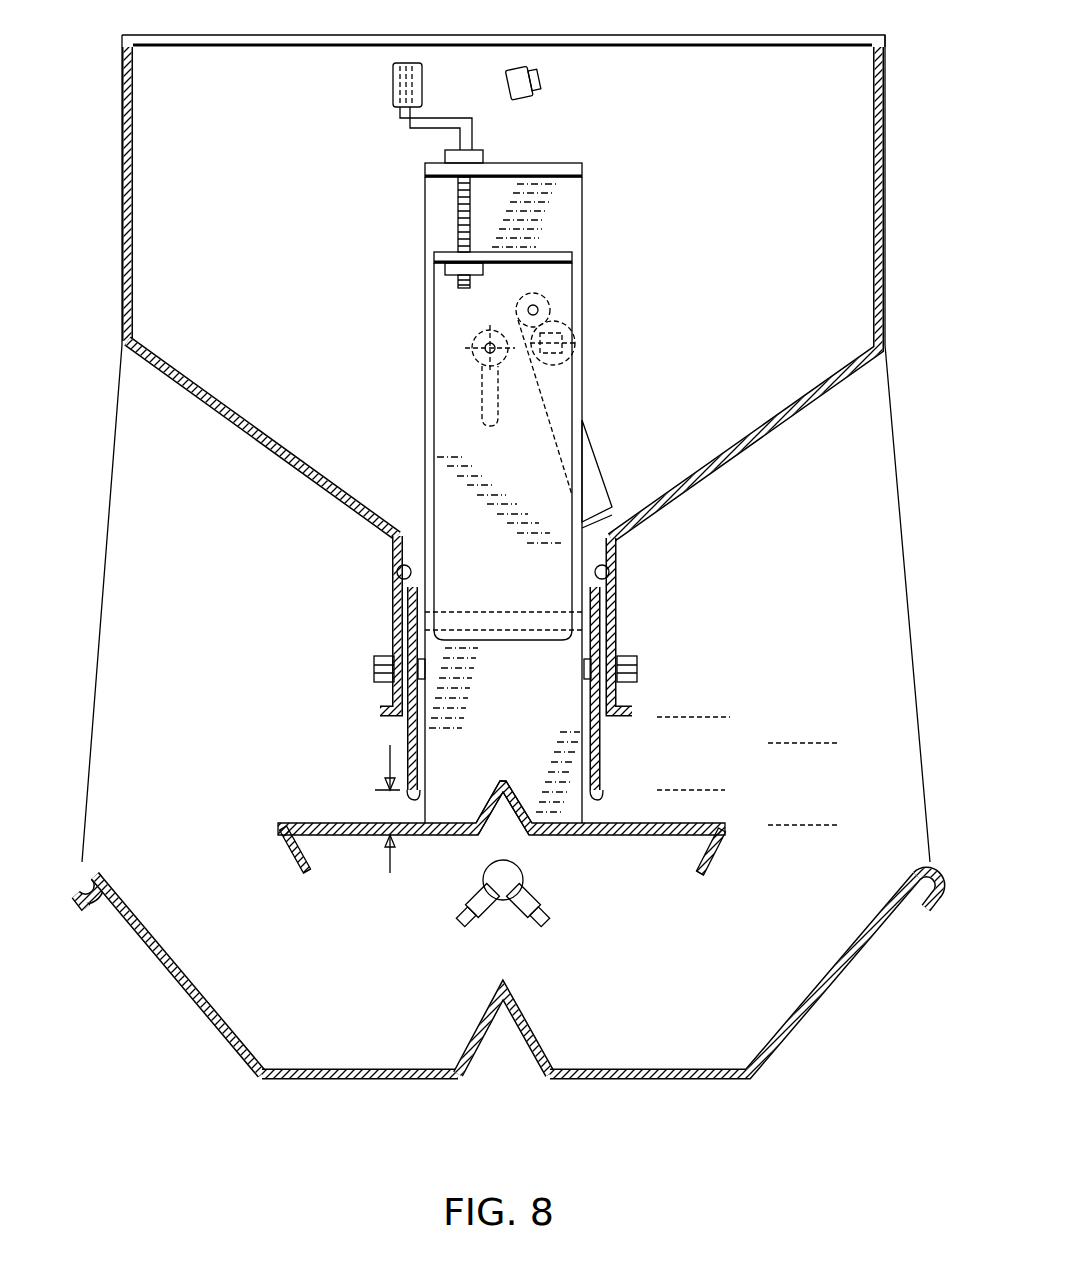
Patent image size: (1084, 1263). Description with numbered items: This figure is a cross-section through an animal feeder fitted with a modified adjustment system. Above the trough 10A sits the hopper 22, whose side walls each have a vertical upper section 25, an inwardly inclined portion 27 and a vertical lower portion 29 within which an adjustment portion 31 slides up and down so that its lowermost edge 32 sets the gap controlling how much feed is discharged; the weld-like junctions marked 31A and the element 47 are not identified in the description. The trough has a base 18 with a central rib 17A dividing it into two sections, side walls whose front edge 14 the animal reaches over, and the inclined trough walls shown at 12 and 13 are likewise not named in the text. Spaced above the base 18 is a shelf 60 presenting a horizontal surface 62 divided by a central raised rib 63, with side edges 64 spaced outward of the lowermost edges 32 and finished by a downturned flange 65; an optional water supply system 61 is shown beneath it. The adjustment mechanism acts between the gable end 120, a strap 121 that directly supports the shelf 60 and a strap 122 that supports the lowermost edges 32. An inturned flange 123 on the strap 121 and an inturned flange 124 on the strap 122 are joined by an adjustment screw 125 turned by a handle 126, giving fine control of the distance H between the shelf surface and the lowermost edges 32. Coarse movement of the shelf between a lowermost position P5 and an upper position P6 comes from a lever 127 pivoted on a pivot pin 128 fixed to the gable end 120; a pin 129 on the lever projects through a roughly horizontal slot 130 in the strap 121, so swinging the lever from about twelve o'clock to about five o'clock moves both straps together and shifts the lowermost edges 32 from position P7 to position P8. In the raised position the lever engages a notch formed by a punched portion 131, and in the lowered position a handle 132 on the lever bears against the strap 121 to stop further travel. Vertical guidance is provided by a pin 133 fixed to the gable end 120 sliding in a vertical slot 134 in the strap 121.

The trough 10A is at (508, 956).
The inclined hopper wall 12 is at (210, 1000).
The inclined hopper wall 13 is at (835, 980).
The front edge 14 is at (90, 862).
The central rib 17A is at (510, 990).
The base 18 is at (355, 1062).
The hopper 22 is at (752, 455).
The vertical upper section 25 is at (133, 270).
The inclined portion 27 is at (300, 470).
The vertical lower portion 29 is at (392, 610).
The adjustment portion 31 is at (405, 740).
The weld 31A is at (397, 572).
The lowermost edge 32 is at (420, 800).
The piston 47 is at (486, 625).
The shelf 60 is at (498, 829).
The water supply system 61 is at (530, 877).
The horizontal surface 62 is at (345, 835).
The central raised rib 63 is at (497, 778).
The side edges 64 is at (283, 828).
The downturned flange 65 is at (300, 862).
The gable end 120 is at (752, 75).
The strap 121 is at (560, 195).
The strap 122 is at (455, 312).
The inturned flange 123 is at (548, 163).
The inturned flange 124 is at (548, 263).
The adjustment screw 125 is at (458, 205).
The manually actuable handle 126 is at (393, 80).
The lever 127 is at (600, 462).
The pivot pin 128 is at (540, 305).
The pin 129 is at (575, 365).
The slot 130 is at (568, 335).
The punched portion 131 is at (540, 80).
The handle 132 is at (605, 512).
The pin 133 is at (485, 348).
The slot 134 is at (488, 415).
The distance H is at (392, 805).
The lowermost position P5 is at (826, 825).
The upper position P6 is at (826, 743).
The position P7 is at (715, 790).
The position P8 is at (715, 717).